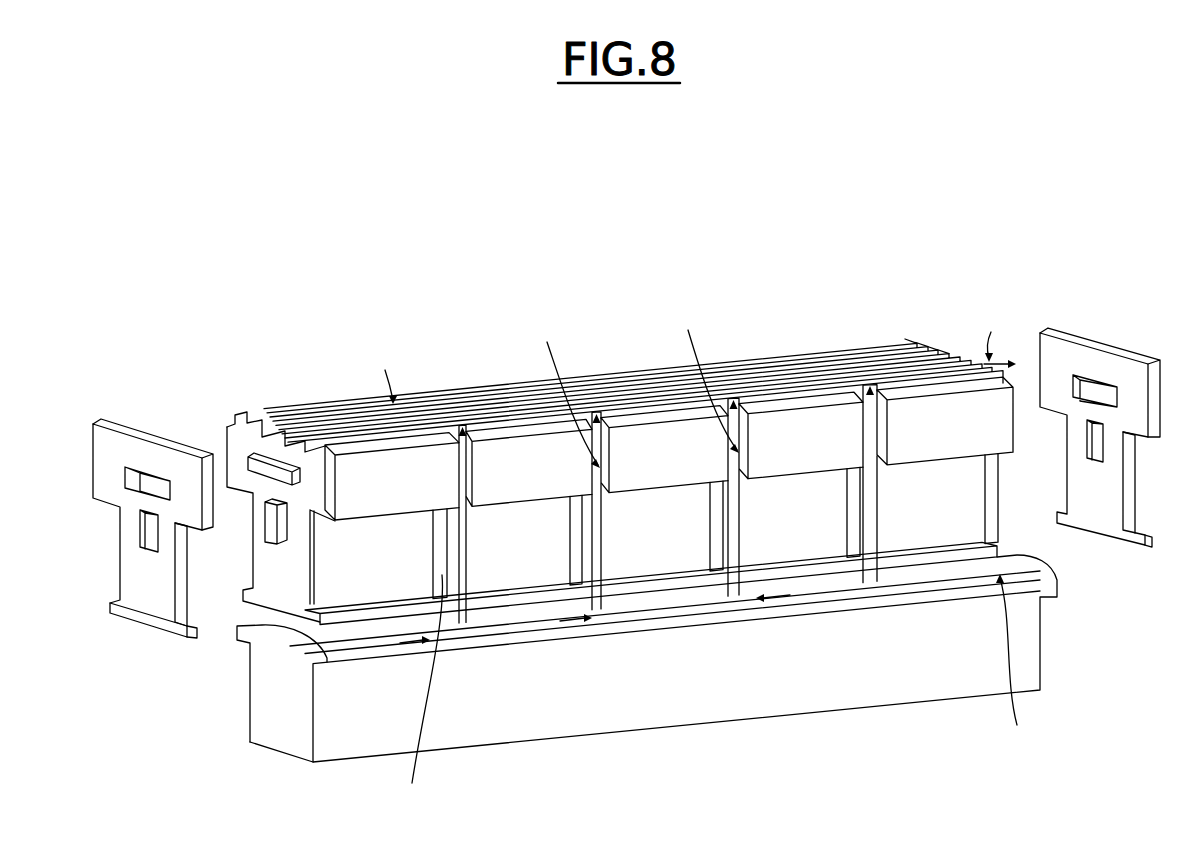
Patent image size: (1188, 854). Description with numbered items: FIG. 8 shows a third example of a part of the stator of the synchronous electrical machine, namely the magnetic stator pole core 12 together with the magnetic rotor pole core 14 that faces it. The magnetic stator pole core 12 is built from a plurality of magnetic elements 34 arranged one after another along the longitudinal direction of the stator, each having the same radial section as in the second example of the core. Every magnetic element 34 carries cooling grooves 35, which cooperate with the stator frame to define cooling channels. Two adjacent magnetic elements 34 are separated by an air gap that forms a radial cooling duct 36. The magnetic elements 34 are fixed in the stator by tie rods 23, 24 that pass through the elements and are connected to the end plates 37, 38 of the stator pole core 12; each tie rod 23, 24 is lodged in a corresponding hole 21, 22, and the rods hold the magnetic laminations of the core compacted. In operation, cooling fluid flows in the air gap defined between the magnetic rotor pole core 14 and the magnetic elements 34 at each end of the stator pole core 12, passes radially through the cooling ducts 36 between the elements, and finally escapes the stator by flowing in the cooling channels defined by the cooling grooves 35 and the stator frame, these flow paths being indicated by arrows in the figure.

The magnetic stator pole core 12 is at (717, 284).
The magnetic rotor pole core 14 is at (280, 757).
The hole 21 is at (147, 480).
The hole 22 is at (147, 540).
The tie rod 23 is at (270, 467).
The tie rod 24 is at (268, 537).
The magnetic element 34 is at (302, 580).
The cooling grooves 35 is at (338, 425).
The radial cooling duct 36 is at (463, 585).
The end plate 37 is at (145, 612).
The end plate 38 is at (1097, 528).